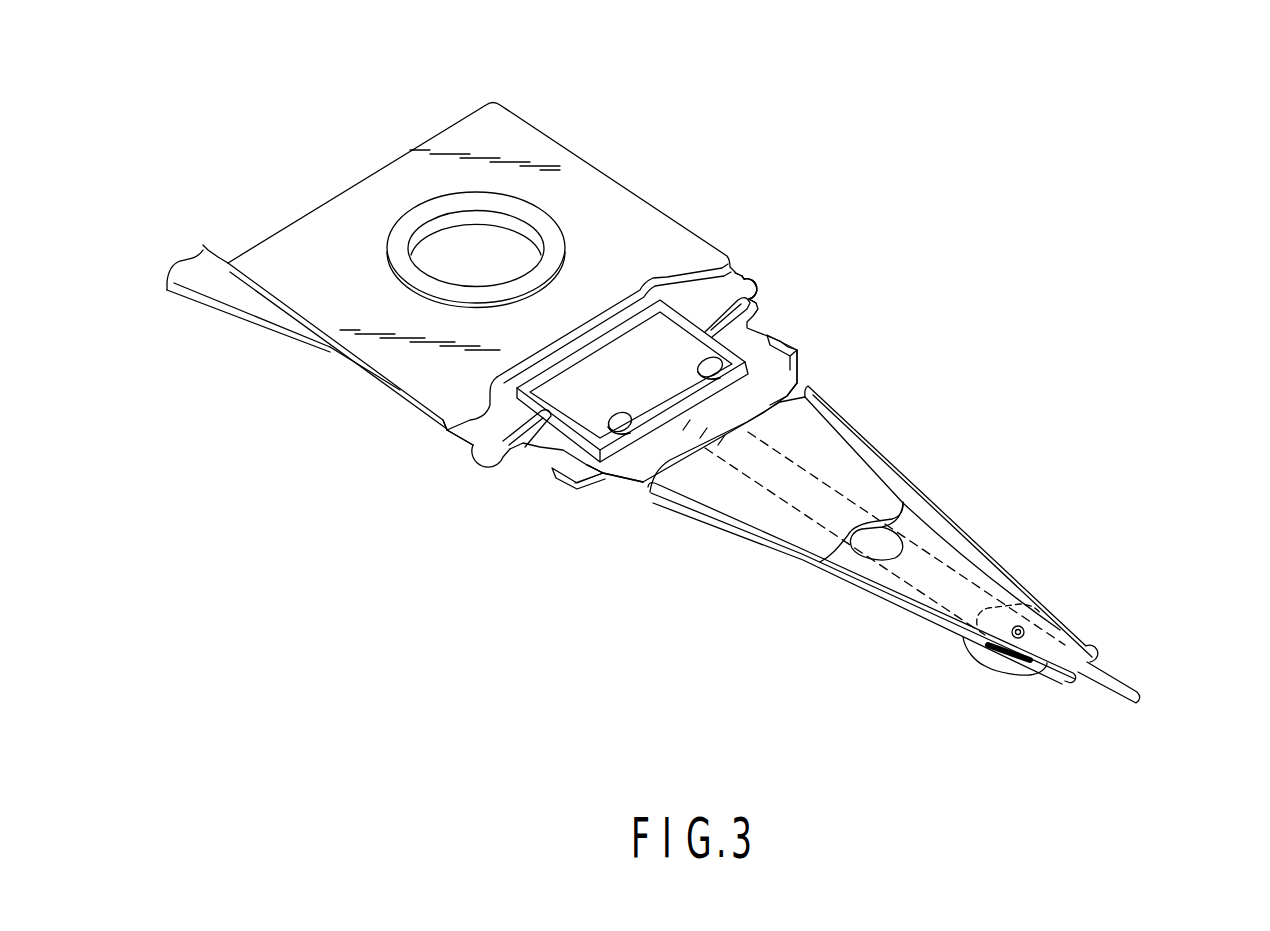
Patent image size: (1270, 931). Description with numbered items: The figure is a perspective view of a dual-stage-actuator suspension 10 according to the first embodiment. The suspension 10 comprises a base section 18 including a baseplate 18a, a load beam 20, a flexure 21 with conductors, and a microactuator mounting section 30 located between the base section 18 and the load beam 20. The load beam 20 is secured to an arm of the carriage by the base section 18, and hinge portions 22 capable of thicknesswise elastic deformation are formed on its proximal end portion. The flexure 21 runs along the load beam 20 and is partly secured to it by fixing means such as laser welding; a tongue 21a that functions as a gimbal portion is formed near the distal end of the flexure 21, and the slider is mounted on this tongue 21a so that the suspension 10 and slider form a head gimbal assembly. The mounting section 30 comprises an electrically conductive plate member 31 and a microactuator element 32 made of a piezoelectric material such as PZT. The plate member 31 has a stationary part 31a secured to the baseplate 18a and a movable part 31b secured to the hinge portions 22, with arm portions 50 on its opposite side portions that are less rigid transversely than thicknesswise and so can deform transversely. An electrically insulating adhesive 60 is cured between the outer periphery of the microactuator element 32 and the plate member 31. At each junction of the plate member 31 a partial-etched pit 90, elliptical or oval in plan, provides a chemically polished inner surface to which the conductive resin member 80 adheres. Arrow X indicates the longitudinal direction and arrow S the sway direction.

The suspension 10 is at (822, 94).
The base section 18 is at (672, 200).
The baseplate 18a is at (590, 182).
The load beam 20 is at (930, 545).
The flexure 21 is at (928, 590).
The tongue 21a is at (1040, 607).
The hinge portions 22 is at (797, 380).
The microactuator mounting section 30 is at (790, 292).
The conductive plate member 31 is at (735, 283).
The stationary part 31a is at (445, 432).
The movable part 31b is at (597, 460).
The microactuator element 32 is at (607, 363).
The arm portions 50 is at (493, 453).
The adhesive 60 is at (533, 435).
The conductive resin member 80 is at (707, 357).
The pit 90 is at (700, 377).